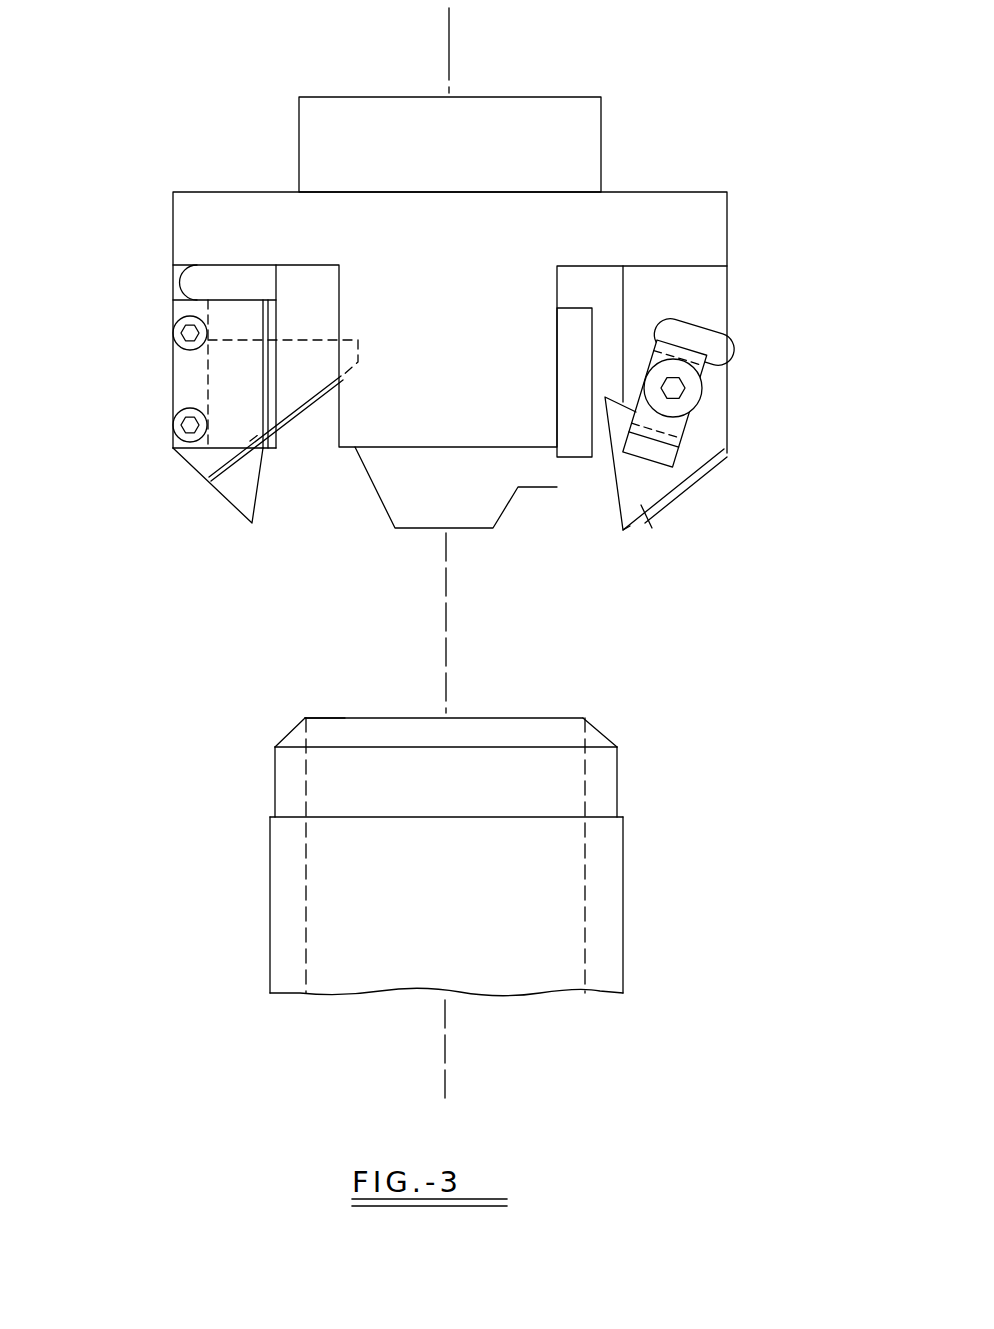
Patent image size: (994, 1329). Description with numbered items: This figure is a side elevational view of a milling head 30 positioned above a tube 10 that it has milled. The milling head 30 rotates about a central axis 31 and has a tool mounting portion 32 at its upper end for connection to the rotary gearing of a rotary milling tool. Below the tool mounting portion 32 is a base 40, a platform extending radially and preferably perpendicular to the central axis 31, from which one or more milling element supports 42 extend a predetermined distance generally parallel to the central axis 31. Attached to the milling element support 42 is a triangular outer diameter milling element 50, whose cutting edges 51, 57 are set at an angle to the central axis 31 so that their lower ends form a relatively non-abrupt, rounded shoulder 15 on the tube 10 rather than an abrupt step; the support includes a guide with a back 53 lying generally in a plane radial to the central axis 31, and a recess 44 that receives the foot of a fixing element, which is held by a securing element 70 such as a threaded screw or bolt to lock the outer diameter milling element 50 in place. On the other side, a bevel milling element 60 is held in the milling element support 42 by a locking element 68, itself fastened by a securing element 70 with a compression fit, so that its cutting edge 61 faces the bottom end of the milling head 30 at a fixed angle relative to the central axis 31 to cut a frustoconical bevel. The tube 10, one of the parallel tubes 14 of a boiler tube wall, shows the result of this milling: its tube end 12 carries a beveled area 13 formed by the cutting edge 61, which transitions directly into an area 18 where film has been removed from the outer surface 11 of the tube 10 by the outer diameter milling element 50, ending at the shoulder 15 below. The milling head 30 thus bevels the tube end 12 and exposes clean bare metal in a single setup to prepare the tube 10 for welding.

The tube 10 is at (206, 799).
The outer surface 11 is at (623, 900).
The tube end 12 is at (535, 718).
The beveled edge or area 13 is at (603, 733).
The tube 14 is at (336, 712).
The shoulder 15 is at (618, 815).
The area where the outer diameter tube film has been removed 18 is at (617, 780).
The milling head 30 is at (246, 168).
The central axis 31 is at (449, 37).
The tool mounting portion 32 is at (601, 134).
The base 40 is at (173, 214).
The milling element support 42 is at (194, 284).
The recess 44 is at (723, 340).
The outer diameter milling element 50 is at (650, 513).
The cutting edge 51 is at (612, 508).
The back 53 is at (225, 500).
The cutting edge 57 is at (628, 532).
The bevel milling element 60 is at (317, 340).
The cutting edge 61 is at (304, 408).
The locking element 68 is at (184, 370).
The securing element 70 is at (693, 396).